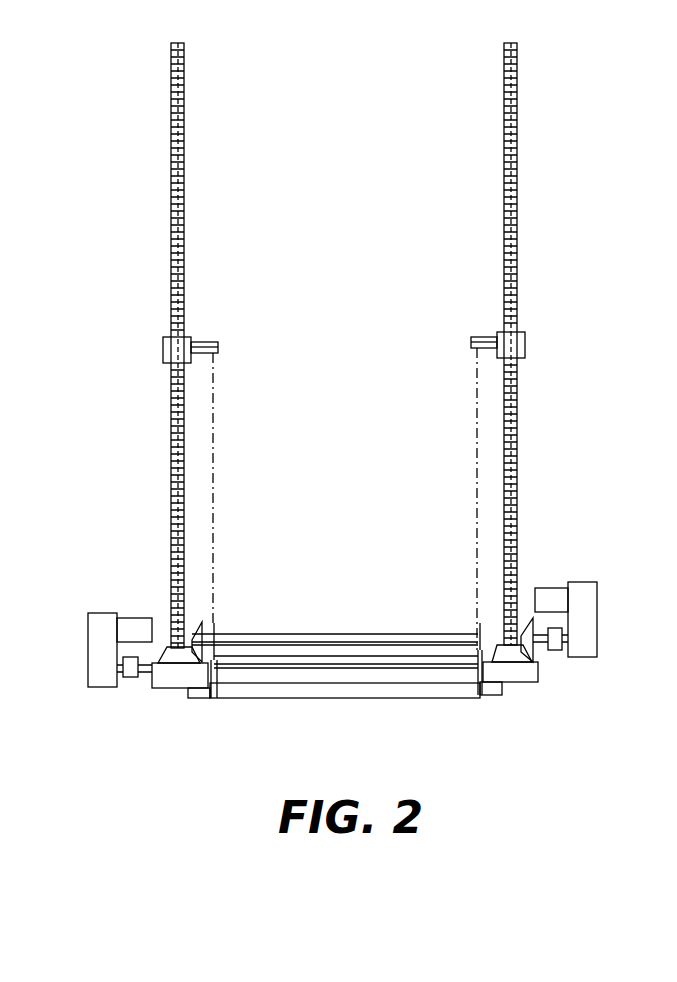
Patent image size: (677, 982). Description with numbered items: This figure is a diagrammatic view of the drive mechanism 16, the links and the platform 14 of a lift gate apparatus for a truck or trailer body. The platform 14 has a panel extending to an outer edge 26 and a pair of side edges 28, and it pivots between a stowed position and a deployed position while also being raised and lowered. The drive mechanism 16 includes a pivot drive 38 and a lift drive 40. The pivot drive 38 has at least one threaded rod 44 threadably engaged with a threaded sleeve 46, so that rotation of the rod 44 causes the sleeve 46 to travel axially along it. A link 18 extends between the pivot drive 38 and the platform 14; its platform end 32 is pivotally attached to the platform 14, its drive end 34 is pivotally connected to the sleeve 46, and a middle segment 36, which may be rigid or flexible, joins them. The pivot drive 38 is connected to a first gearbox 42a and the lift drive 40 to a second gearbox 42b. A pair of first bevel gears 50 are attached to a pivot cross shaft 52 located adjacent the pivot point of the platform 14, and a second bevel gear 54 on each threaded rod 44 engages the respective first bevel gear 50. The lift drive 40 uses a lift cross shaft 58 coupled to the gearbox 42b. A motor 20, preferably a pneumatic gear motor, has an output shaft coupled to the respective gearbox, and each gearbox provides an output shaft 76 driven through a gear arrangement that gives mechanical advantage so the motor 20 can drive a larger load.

The platform 14 is at (388, 700).
The drive mechanism 16 is at (343, 622).
The link 18 is at (217, 475).
The motor 20 is at (130, 614).
The outer edge 26 is at (423, 688).
The side edges 28 is at (207, 697).
The platform end 32 is at (215, 700).
The drive end 34 is at (218, 353).
The middle segment 36 is at (215, 511).
The pivot drive 38 is at (531, 440).
The lift drive 40 is at (168, 693).
The first gearbox 42a is at (585, 582).
The second gearbox 42b is at (102, 614).
The threaded rod 44 is at (184, 213).
The threaded sleeve 46 is at (191, 337).
The first bevel gears 50 is at (200, 628).
The pivot cross shaft 52 is at (313, 633).
The second bevel gear 54 is at (165, 647).
The lift cross shaft 58 is at (380, 656).
The output shaft 76 is at (122, 690).